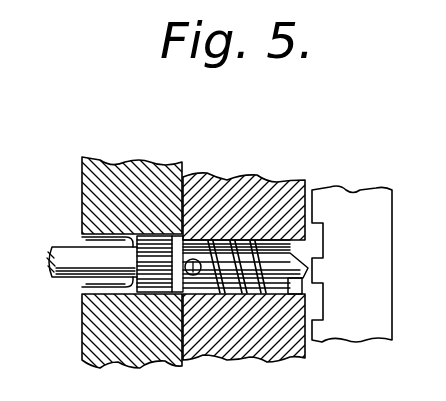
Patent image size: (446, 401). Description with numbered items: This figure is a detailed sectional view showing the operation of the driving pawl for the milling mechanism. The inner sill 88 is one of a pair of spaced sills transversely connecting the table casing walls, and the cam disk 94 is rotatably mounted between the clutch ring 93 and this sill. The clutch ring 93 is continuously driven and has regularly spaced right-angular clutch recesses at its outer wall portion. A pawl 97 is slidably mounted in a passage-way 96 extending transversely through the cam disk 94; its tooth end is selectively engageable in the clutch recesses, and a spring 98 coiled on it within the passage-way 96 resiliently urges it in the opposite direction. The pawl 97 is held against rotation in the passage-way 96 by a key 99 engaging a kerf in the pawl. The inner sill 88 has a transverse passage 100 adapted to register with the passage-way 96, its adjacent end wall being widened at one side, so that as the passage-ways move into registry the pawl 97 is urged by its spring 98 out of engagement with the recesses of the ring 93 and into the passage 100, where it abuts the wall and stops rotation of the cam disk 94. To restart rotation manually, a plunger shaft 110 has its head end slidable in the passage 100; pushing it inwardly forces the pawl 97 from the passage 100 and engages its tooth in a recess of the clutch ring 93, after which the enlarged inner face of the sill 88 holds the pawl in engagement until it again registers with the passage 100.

The sill 88 is at (115, 178).
The cam disk 94 is at (285, 180).
The clutch ring 93 is at (366, 212).
The pawl 97 is at (304, 266).
The passage-way 96 is at (277, 296).
The key 99 is at (191, 276).
The spring 98 is at (232, 243).
The passage 100 is at (103, 285).
The plunger shaft 110 is at (92, 250).